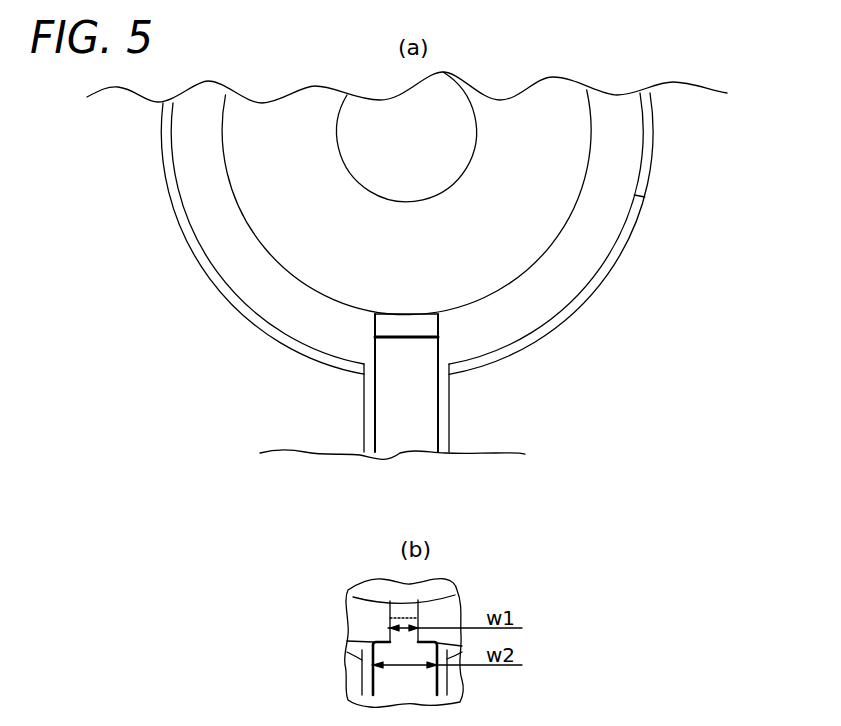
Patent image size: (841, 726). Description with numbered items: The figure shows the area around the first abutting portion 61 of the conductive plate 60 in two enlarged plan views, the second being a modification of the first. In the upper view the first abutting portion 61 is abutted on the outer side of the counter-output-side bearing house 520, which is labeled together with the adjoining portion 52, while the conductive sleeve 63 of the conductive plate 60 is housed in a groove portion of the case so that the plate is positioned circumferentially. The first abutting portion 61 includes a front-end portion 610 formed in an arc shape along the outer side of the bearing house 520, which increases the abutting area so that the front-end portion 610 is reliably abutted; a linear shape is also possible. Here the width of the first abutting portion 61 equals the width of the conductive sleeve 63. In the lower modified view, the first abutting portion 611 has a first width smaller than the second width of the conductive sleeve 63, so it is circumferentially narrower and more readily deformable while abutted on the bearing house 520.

The cylindrical portion 52 is at (272, 297).
The counter-output-side bearing house 520 is at (265, 259).
The conductive plate 60 is at (440, 405).
The first abutting portion 61 is at (407, 327).
The front-end portion 610 is at (385, 323).
The first abutting portion 611 is at (398, 608).
The conductive sleeve 63 is at (394, 392).